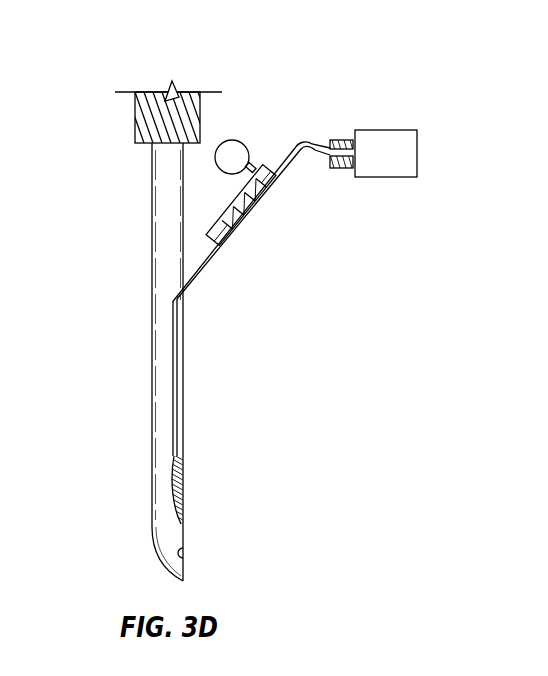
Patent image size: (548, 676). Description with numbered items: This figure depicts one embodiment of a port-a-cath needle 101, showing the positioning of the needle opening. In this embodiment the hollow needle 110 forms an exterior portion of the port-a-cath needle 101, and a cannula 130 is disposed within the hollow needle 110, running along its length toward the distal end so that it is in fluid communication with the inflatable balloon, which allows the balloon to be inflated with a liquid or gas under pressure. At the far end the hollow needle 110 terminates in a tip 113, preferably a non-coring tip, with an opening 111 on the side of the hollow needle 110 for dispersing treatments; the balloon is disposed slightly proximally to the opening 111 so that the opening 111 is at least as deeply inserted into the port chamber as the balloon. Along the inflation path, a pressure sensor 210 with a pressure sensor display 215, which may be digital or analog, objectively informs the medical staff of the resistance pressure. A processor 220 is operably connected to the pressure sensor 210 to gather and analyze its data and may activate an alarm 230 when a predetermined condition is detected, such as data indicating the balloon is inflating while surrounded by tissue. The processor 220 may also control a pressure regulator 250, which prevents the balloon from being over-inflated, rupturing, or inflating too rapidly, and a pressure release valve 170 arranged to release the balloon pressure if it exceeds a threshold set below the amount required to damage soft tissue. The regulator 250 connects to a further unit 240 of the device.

The port-a-cath needle 101 is at (109, 58).
The hollow needle 110 is at (165, 198).
The opening 111 is at (190, 553).
The tip 113 is at (151, 528).
The cannula 130 is at (172, 308).
The pressure release valve 170 is at (256, 172).
The pressure sensor 210 is at (247, 185).
The pressure sensor display 215 is at (232, 141).
The processor 220 is at (235, 205).
The alarm 230 is at (218, 233).
The controller 240 is at (406, 167).
The pressure regulator 250 is at (337, 140).